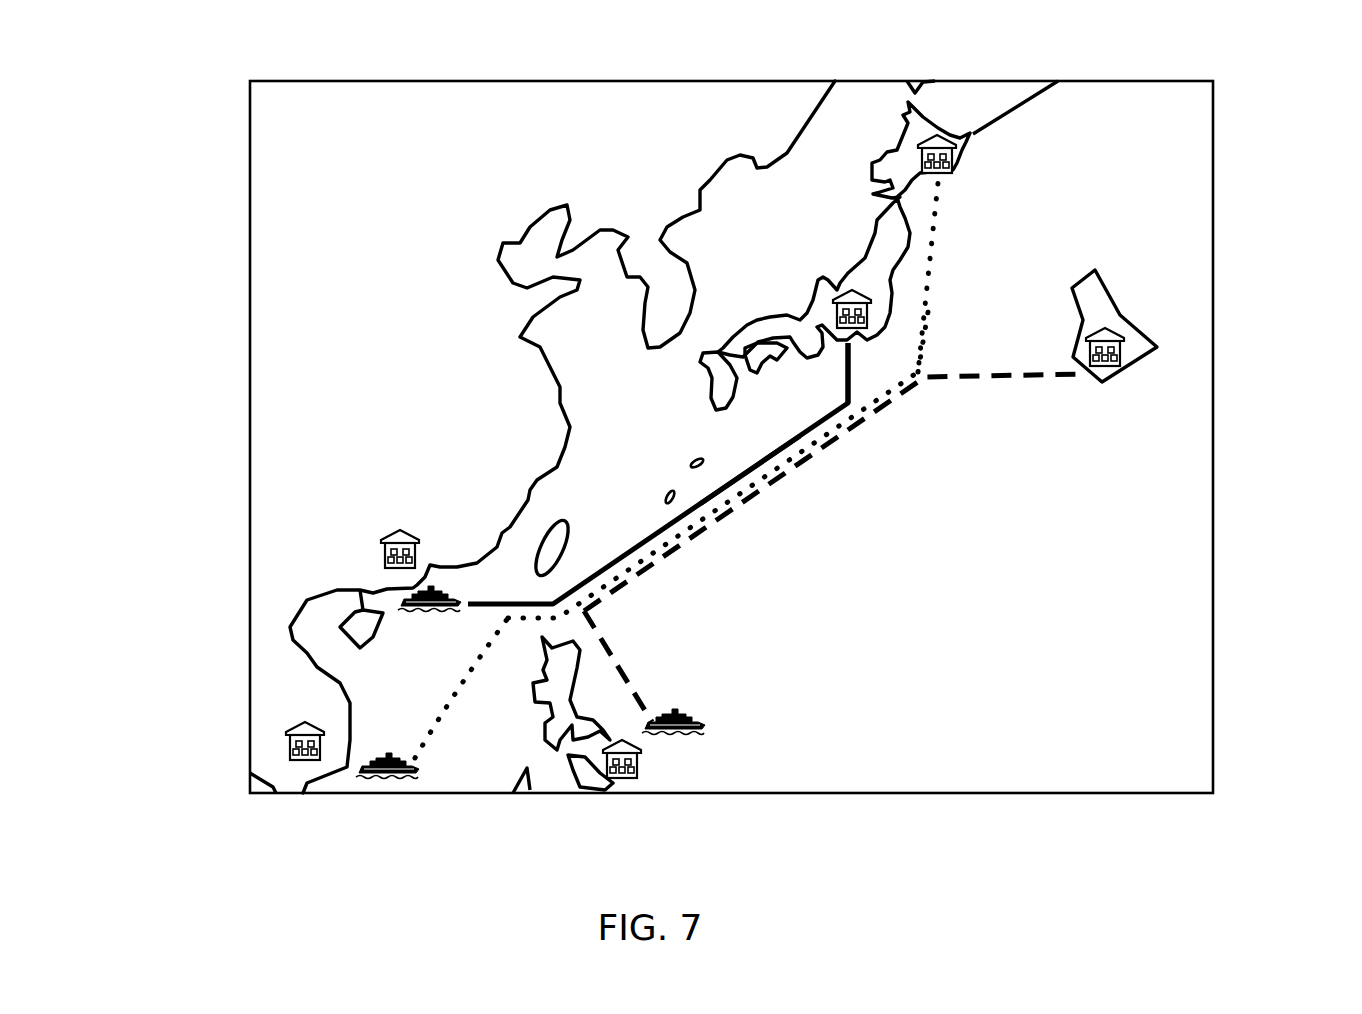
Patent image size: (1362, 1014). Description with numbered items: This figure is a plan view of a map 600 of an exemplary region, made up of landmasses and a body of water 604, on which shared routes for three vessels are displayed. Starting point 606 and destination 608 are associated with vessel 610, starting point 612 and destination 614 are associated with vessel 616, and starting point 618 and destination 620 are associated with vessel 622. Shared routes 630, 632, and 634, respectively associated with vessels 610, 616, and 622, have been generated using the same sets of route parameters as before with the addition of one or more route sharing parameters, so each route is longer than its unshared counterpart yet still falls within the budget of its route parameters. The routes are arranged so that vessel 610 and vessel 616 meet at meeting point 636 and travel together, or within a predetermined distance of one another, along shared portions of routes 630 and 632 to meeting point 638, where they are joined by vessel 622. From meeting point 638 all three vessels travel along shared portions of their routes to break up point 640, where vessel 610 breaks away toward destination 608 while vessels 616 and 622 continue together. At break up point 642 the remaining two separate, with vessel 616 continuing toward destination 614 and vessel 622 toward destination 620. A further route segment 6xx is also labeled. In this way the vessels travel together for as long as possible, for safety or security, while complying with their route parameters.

The map 600 is at (250, 139).
The body of water 604 is at (1157, 627).
The starting point 606 is at (385, 533).
The destination 608 is at (852, 291).
The vessel 610 is at (407, 600).
The starting point 612 is at (287, 738).
The destination 614 is at (955, 166).
The vessel 616 is at (388, 778).
The starting point 618 is at (638, 780).
The destination 620 is at (1124, 355).
The vessel 622 is at (698, 732).
The shared route 630 is at (645, 548).
The shared route 632 is at (452, 708).
The shared route 634 is at (1015, 378).
The meeting point 636 is at (493, 613).
The meeting point 638 is at (597, 618).
The break up point 640 is at (838, 400).
The break up point 642 is at (932, 357).
The route segment 6xx is at (778, 502).